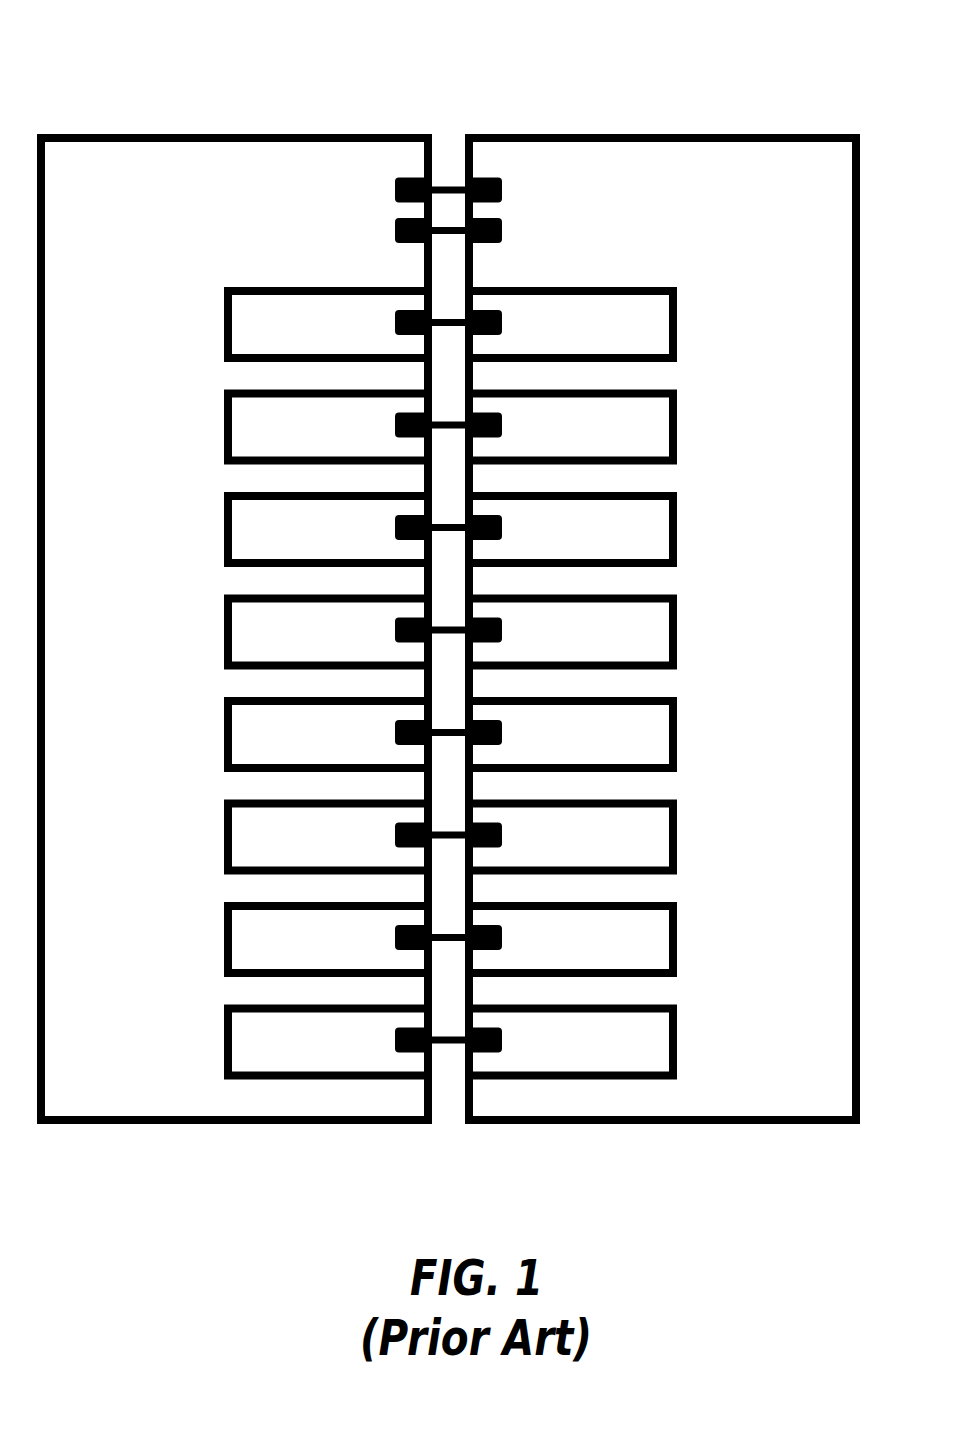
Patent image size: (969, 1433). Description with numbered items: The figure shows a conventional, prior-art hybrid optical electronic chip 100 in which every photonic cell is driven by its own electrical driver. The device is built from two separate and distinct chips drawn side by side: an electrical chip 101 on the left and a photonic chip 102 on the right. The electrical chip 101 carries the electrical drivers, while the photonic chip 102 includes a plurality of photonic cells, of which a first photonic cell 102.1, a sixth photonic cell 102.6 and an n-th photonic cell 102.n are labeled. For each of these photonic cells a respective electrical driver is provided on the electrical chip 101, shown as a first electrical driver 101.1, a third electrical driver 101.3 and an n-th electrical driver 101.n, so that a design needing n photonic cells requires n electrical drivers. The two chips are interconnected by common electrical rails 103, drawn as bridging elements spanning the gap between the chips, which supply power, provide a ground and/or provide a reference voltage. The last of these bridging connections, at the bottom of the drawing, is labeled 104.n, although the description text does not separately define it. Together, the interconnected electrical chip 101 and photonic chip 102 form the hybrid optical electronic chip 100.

The hybrid optical electronic chip 100 is at (155, 62).
The electrical chip 101 is at (338, 135).
The electrical driver 101.1 is at (225, 320).
The electrical driver 101.3 is at (225, 532).
The electrical driver 101.n is at (225, 1037).
The photonic chip 102 is at (560, 137).
The photonic cell 102.1 is at (678, 312).
The photonic cell 102.6 is at (677, 818).
The photonic cell 102.n is at (677, 1035).
The common electrical rails 103 is at (456, 228).
The n-th bridging contact 104.n is at (450, 1050).